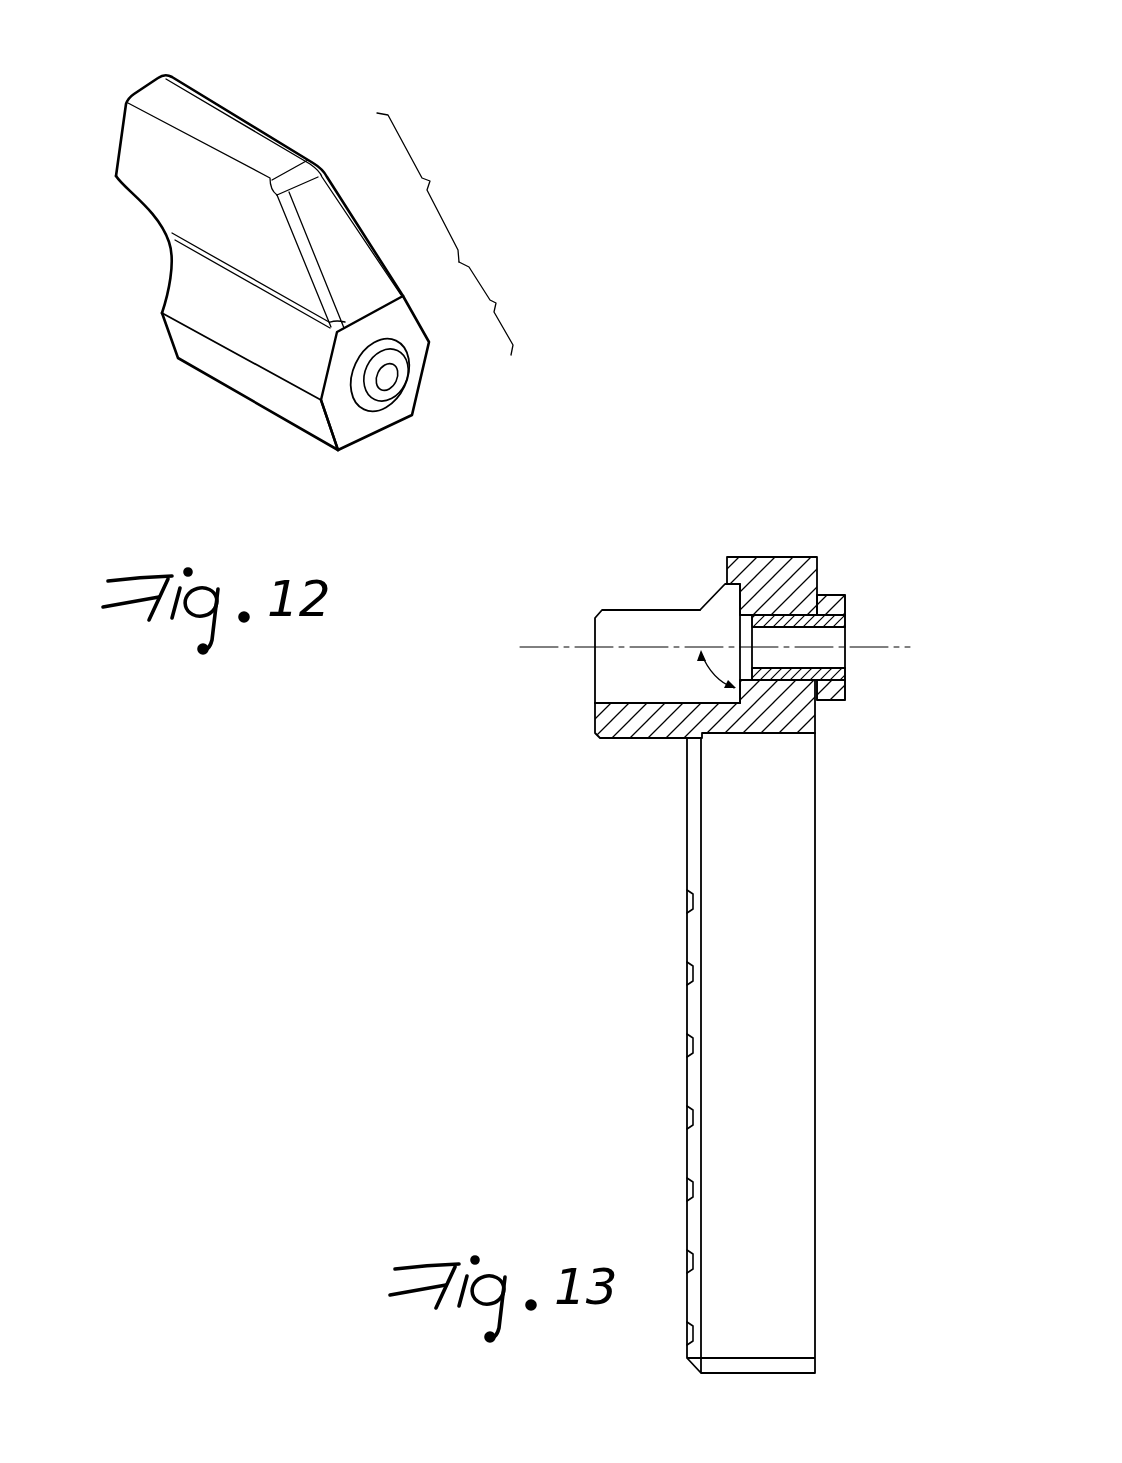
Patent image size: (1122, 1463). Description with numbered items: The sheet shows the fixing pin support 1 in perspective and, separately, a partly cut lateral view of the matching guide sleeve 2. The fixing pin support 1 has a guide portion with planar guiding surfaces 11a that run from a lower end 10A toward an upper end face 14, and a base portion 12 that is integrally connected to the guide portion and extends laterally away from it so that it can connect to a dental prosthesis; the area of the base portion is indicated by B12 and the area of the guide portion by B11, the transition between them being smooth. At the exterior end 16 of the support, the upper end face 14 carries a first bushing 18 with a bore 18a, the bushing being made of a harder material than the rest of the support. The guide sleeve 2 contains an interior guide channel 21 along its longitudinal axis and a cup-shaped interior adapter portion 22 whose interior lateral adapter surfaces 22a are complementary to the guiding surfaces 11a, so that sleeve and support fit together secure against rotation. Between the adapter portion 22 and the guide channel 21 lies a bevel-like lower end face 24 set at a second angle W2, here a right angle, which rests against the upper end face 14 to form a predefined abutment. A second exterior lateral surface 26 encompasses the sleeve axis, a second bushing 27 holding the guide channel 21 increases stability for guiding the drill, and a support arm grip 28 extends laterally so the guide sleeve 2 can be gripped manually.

In FIG. 12, the fixing pin support 1 is at (290, 264).
In FIG. 12, the base portion 12 is at (188, 205).
In FIG. 12, the lower end 10A is at (290, 301).
In FIG. 12, the guiding surface 11a is at (260, 332).
In FIG. 12, the exterior end 16 is at (338, 448).
In FIG. 12, the upper end face of fixing pin support 14 is at (428, 411).
In FIG. 12, the first bushing 18 is at (436, 408).
In FIG. 12, the bore of first bushing 18a is at (388, 378).
In FIG. 12, the area of base portion B12 is at (442, 187).
In FIG. 12, the area of fixing pin support B11 is at (516, 308).
In FIG. 13, the guide sleeve 2 is at (697, 917).
In FIG. 13, the interior adapter portion 22 is at (697, 631).
In FIG. 13, the interior lateral adapter surface 22a is at (655, 628).
In FIG. 13, the lower end face of guide sleeve 24 is at (737, 602).
In FIG. 13, the second lateral surface 26 is at (785, 557).
In FIG. 13, the second bushing 27 is at (838, 612).
In FIG. 13, the guide channel 21 is at (823, 657).
In FIG. 13, the second angle W2 is at (702, 652).
In FIG. 13, the support arm grip 28 is at (770, 946).